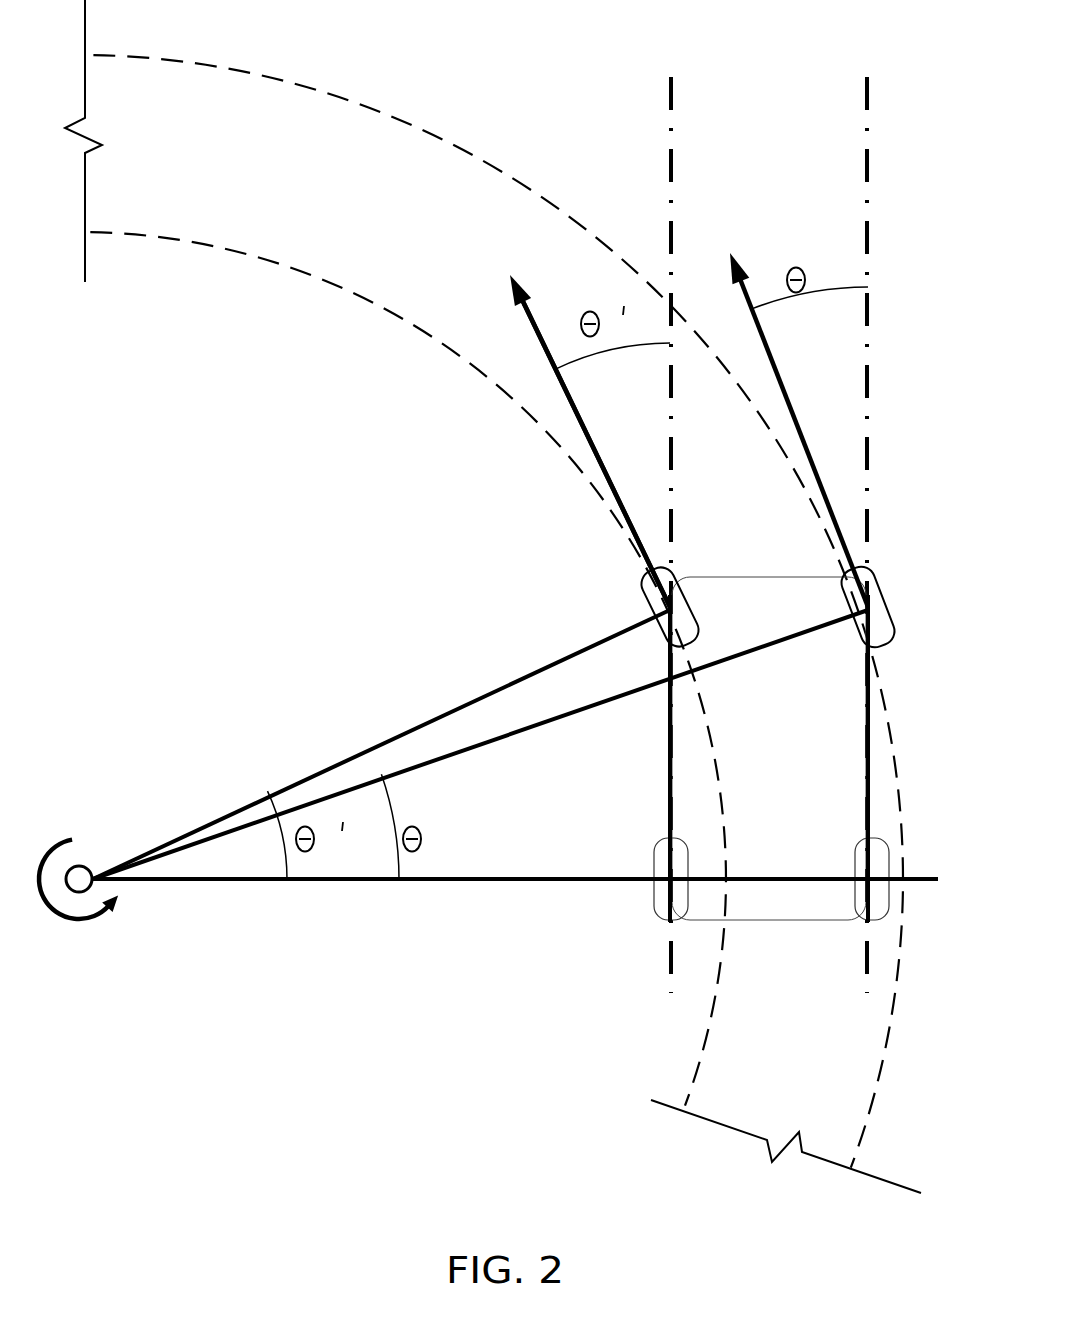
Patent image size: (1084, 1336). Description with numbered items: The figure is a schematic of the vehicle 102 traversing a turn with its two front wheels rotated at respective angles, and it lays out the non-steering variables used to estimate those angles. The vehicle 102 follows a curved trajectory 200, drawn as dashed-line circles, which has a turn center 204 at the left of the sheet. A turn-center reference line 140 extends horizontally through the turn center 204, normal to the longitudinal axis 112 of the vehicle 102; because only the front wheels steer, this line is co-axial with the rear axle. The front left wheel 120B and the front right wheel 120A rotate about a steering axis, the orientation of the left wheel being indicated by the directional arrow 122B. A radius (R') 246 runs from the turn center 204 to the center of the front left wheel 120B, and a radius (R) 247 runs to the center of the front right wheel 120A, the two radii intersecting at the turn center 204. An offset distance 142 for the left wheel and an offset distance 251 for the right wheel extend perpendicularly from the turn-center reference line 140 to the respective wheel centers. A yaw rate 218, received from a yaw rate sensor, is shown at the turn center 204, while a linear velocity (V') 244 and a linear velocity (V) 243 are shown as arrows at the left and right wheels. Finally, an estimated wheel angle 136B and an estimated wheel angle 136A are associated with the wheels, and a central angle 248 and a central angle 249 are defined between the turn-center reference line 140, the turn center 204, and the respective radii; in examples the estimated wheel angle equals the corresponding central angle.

The curved trajectory 200 is at (273, 80).
The longitudinal axis 112 is at (671, 102).
The vehicle 102 is at (821, 935).
The turn-center reference line 140 is at (516, 881).
The radius (R') 246 is at (423, 717).
The radius (R) 247 is at (753, 647).
The offset distance (B') 142 is at (668, 743).
The offset distance (B) 251 is at (866, 777).
The front left wheel 120B is at (645, 597).
The front right wheel 120A is at (886, 614).
The linear velocity (V') 244 is at (530, 325).
The directional arrow 122B is at (535, 326).
The linear velocity (V) 243 is at (753, 297).
The estimated wheel angle (ΘEA') 136B is at (625, 340).
The estimated wheel angle (ΘEA) 136A is at (792, 303).
The turn center 204 is at (100, 864).
The yaw rate (ω) 218 is at (111, 913).
The central angle (ΘCA') 248 is at (273, 881).
The central angle (ΘCA) 249 is at (390, 881).